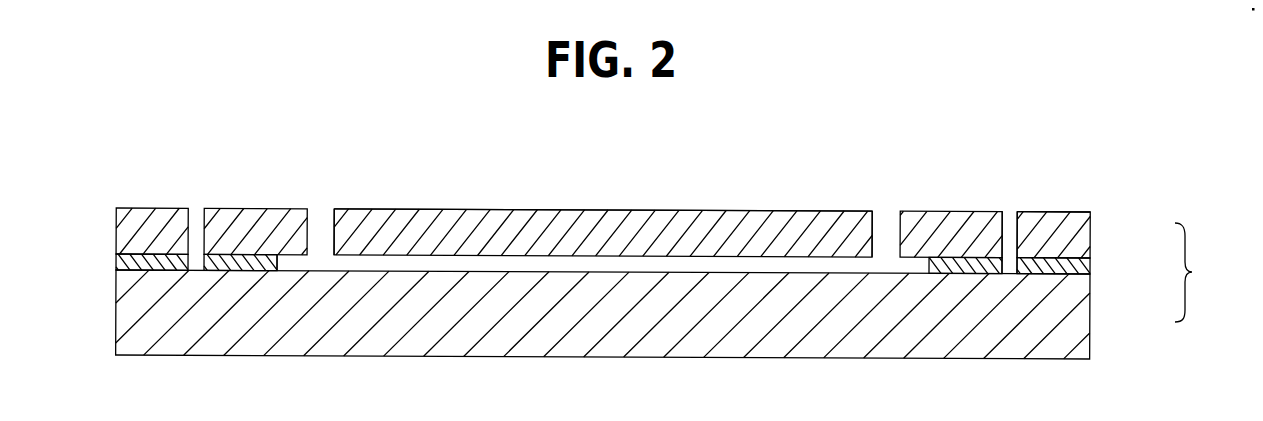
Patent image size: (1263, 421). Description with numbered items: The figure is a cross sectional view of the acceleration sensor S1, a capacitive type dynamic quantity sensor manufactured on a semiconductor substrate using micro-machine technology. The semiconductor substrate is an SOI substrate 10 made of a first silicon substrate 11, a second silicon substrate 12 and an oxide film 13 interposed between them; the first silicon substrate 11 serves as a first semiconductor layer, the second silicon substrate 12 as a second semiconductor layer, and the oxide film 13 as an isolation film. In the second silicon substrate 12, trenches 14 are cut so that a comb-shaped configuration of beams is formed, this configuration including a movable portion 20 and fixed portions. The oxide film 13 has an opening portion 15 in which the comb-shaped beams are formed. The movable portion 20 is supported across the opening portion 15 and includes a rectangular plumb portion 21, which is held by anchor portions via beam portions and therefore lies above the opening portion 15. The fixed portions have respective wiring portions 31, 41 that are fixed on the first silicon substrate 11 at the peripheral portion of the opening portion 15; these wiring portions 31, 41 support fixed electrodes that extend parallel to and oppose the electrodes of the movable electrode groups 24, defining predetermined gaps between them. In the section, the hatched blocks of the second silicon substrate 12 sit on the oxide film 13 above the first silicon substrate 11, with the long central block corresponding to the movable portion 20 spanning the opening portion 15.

The SOI substrate 10 is at (1201, 272).
The first silicon substrate 11 is at (1080, 296).
The second silicon substrate 12 is at (1080, 238).
The oxide film 13 is at (1080, 262).
The trench 14 is at (1006, 212).
The opening portion 15 is at (277, 262).
The movable portion 20 is at (697, 206).
The plumb portion 21 is at (625, 208).
The movable electrode group 24 is at (345, 208).
The wiring portion 31 is at (225, 208).
The wiring portion 41 is at (967, 210).
The acceleration sensor S1 is at (1088, 191).